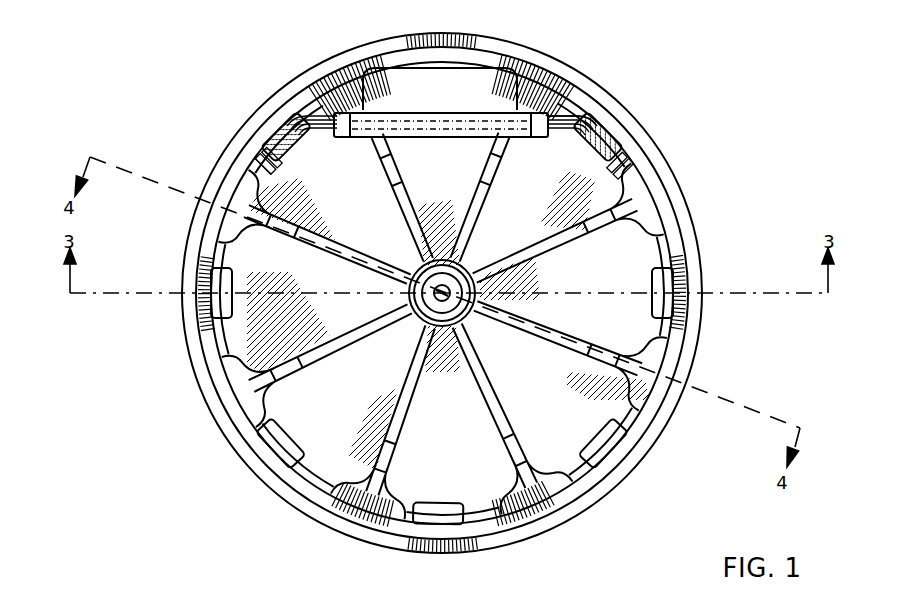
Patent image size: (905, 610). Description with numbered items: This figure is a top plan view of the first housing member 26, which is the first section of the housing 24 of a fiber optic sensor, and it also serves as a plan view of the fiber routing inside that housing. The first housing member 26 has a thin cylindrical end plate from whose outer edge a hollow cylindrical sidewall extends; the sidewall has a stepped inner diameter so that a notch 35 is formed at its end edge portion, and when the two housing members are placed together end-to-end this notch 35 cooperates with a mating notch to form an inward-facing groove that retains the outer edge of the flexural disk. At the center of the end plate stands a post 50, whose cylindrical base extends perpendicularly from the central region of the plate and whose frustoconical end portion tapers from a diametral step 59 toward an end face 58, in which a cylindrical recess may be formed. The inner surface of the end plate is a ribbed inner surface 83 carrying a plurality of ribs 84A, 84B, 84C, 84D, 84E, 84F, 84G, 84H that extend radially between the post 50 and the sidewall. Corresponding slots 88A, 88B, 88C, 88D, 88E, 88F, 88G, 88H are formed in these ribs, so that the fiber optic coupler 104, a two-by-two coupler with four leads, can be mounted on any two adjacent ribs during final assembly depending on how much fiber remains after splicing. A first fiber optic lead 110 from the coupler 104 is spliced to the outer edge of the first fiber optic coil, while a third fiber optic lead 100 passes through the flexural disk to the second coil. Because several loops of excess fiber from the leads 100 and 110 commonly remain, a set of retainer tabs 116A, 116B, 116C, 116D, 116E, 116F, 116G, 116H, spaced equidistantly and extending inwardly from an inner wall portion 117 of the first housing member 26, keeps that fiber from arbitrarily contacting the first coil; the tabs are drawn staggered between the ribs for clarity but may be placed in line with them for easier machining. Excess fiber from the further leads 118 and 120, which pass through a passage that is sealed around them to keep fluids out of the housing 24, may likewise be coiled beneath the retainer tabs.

The housing 24 is at (702, 270).
The first housing member 26 is at (697, 318).
The notch 35 is at (288, 493).
The post 50 is at (420, 333).
The end face 58 is at (448, 284).
The diametral step 59 is at (418, 274).
The ribbed inner surface 83 is at (442, 293).
The rib 84A is at (640, 203).
The rib 84B is at (524, 328).
The rib 84C is at (510, 407).
The rib 84D is at (400, 435).
The rib 84E is at (333, 350).
The rib 84F is at (325, 240).
The rib 84G is at (345, 105).
The rib 84H is at (552, 107).
The slot 88A is at (665, 232).
The slot 88B is at (700, 342).
The slot 88C is at (596, 513).
The slot 88D is at (391, 520).
The slot 88E is at (270, 395).
The slot 88F is at (237, 234).
The slot 88G is at (360, 72).
The slot 88H is at (441, 138).
The third fiber optic lead 100 is at (262, 155).
The fiber optic coupler 104 is at (468, 225).
The first fiber optic lead 110 is at (258, 163).
The retainer tab 116A is at (622, 147).
The retainer tab 116B is at (670, 262).
The retainer tab 116C is at (627, 430).
The retainer tab 116D is at (468, 507).
The retainer tab 116E is at (278, 470).
The retainer tab 116F is at (235, 270).
The retainer tab 116G is at (285, 130).
The retainer tab 116H is at (403, 78).
The inner wall portion 117 is at (607, 487).
The fiber optic lead 118 is at (633, 120).
The fiber optic lead 120 is at (645, 133).